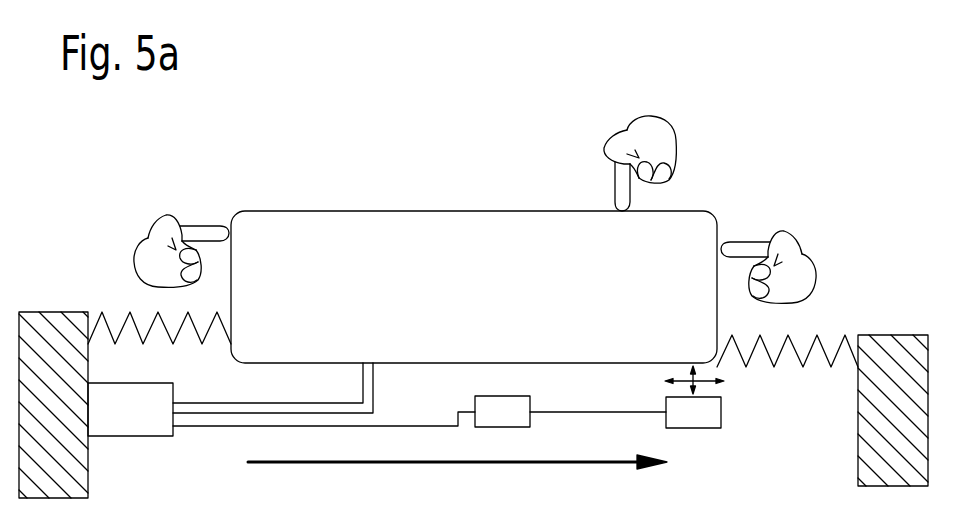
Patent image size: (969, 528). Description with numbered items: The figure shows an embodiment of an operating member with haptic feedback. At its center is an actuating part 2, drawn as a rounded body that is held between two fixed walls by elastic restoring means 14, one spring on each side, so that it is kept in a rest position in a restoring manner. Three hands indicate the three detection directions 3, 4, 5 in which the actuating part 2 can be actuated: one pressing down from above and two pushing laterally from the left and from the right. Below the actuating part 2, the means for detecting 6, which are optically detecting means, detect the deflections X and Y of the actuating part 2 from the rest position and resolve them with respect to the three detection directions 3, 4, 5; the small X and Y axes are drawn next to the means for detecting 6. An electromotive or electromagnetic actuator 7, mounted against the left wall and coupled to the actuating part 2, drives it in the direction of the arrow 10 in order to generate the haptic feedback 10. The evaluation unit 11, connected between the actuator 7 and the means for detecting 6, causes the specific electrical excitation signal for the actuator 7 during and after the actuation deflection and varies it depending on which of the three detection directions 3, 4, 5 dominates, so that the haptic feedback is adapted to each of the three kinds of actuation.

The actuating part 2 is at (428, 226).
The detection direction 3 is at (621, 210).
The detection direction 4 is at (229, 232).
The detection direction 5 is at (722, 248).
The means for detecting 6 is at (705, 418).
The actuator 7 is at (128, 420).
The arrow / haptic feedback direction 10 is at (371, 466).
The evaluation unit 11 is at (530, 421).
The elastic restoring means 14 is at (101, 312).